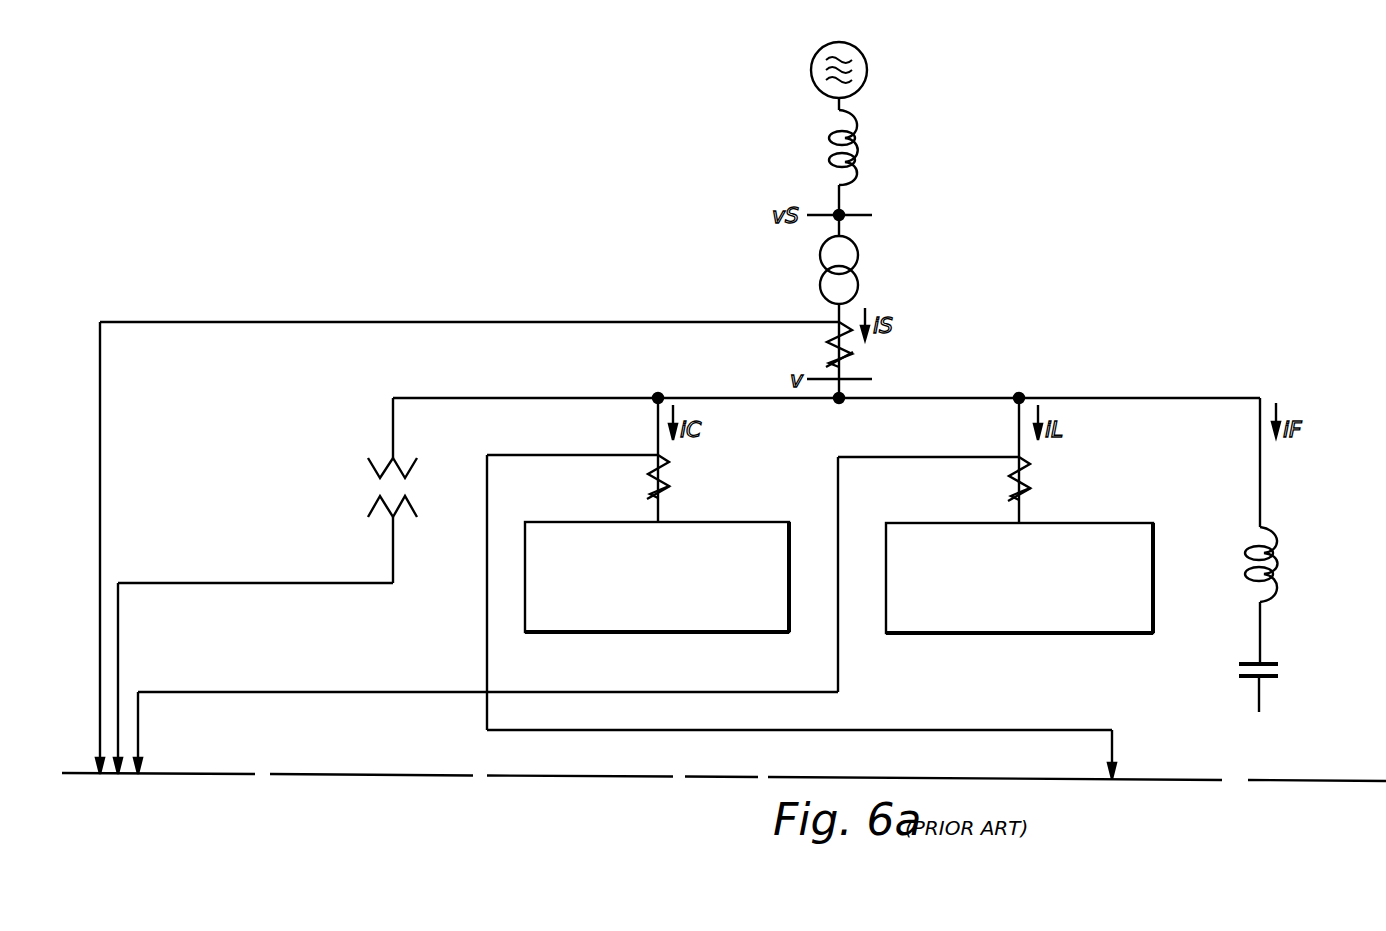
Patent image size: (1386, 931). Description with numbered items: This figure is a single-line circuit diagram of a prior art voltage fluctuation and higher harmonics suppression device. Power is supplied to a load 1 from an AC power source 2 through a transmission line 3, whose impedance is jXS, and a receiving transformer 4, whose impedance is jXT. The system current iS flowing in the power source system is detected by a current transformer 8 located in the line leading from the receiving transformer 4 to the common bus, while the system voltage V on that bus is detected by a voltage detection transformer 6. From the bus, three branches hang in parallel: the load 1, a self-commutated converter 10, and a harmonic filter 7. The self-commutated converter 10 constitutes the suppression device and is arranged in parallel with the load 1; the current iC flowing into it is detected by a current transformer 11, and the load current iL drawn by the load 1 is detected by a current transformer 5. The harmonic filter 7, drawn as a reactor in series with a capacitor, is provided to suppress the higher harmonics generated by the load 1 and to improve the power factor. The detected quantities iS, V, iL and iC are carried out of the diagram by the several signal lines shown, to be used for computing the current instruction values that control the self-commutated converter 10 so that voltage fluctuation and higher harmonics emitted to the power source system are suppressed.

The load 1 is at (1153, 592).
The AC power source 2 is at (811, 68).
The transmission line 3 is at (828, 138).
The receiving transformer 4 is at (821, 255).
The current transformer 5 is at (1030, 485).
The voltage detection transformer 6 is at (370, 469).
The harmonic filter 7 is at (1270, 663).
The current transformer 8 is at (828, 342).
The self-commutated converter 10 is at (789, 606).
The current transformer 11 is at (668, 479).